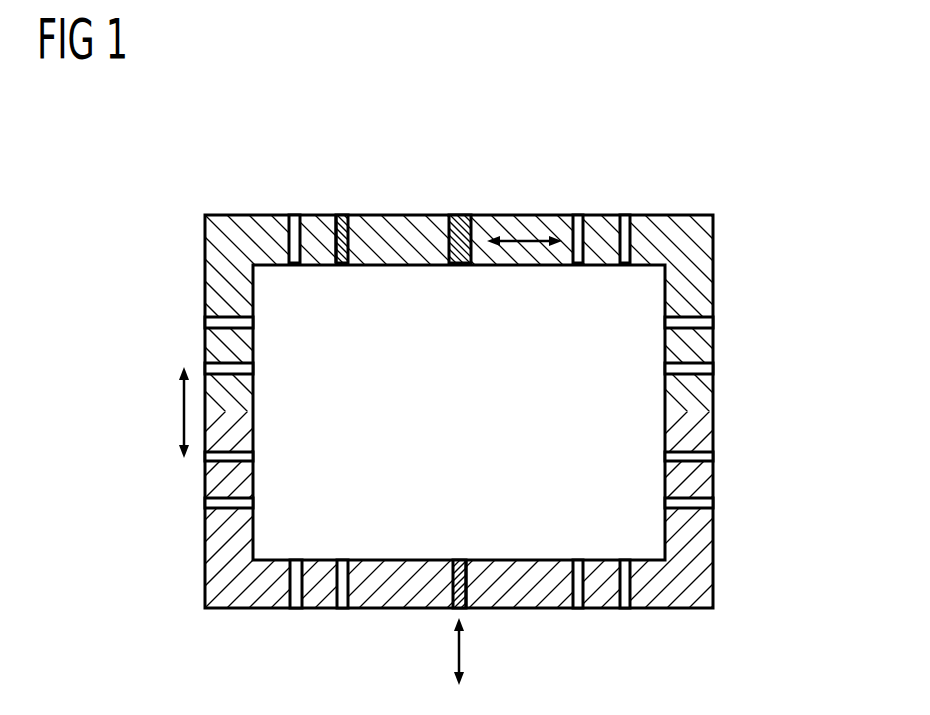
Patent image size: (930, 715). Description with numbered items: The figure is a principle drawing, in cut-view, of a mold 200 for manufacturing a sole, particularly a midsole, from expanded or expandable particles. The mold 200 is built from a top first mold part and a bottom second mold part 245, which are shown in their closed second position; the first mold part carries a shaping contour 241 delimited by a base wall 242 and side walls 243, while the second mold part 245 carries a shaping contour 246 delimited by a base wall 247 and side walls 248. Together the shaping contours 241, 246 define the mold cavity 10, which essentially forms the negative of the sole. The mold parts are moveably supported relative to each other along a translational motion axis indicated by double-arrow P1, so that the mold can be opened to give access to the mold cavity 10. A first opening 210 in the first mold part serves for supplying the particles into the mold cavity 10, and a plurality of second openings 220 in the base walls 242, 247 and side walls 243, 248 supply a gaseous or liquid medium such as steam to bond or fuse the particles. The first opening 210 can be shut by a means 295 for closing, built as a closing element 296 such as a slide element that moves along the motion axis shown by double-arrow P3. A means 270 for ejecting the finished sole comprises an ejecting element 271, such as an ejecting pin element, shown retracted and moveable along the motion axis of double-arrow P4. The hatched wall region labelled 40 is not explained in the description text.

The mold 200 is at (160, 256).
The mold cavity 10 is at (578, 422).
The wall of housing 40 is at (254, 215).
The second openings 220 is at (622, 266).
The means for ejecting 270 is at (340, 204).
The ejecting element 271 is at (338, 264).
The means for closing 295 is at (493, 177).
The closing element 296 is at (497, 201).
The base wall 242 is at (318, 264).
The first opening 210 is at (432, 266).
The shaping contour 241 is at (553, 266).
The side wall 243 is at (712, 383).
The side wall 248 is at (712, 530).
The shaping contour 246 is at (372, 560).
The base wall 247 is at (330, 607).
The second mold part 245 is at (667, 600).
The motion axis P1 is at (182, 410).
The motion axis P3 is at (513, 264).
The motion axis P4 is at (468, 650).